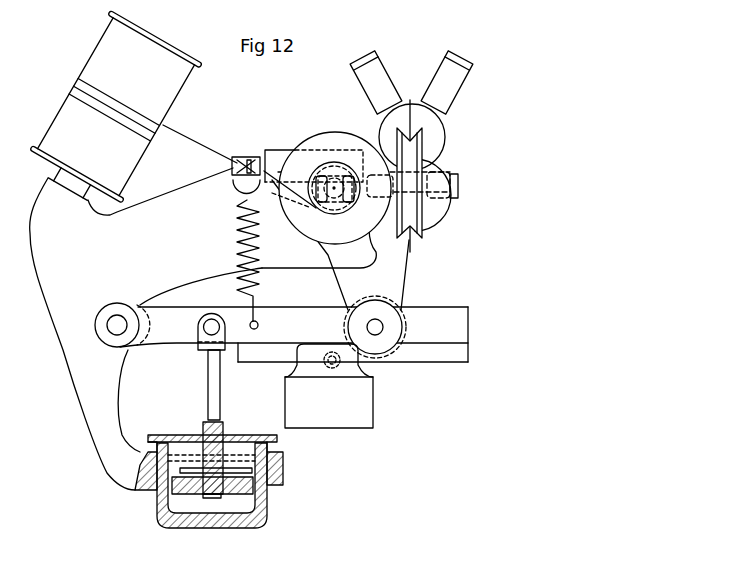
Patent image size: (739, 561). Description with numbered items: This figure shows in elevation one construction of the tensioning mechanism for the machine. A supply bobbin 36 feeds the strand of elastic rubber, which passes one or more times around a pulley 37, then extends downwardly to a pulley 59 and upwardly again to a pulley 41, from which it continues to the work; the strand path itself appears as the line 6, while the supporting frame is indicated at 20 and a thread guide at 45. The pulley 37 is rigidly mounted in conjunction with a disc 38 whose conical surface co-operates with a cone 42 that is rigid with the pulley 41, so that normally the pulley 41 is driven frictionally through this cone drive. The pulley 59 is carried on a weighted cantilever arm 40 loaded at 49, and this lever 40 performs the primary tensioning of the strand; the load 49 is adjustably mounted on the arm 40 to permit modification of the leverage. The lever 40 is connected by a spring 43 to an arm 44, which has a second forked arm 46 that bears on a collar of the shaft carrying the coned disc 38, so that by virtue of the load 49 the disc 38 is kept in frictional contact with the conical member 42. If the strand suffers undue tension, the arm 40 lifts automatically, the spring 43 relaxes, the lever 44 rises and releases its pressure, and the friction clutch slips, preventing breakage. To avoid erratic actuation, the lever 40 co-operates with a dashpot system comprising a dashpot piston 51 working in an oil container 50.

The thread 6 is at (189, 138).
The frame 20 is at (131, 333).
The supply bobbin 36 is at (74, 92).
The pulley 37 is at (330, 213).
The disc 38 is at (322, 137).
The cantilever arm 40 is at (288, 306).
The pulley 41 is at (416, 225).
The cone 42 is at (374, 193).
The spring 43 is at (236, 235).
The arm 44 is at (216, 175).
The tension device 45 is at (272, 160).
The forked arm 46 is at (290, 200).
The load 49 is at (374, 412).
The cup 50 is at (270, 513).
The dashpot piston 51 is at (257, 435).
The pulley 59 is at (402, 313).